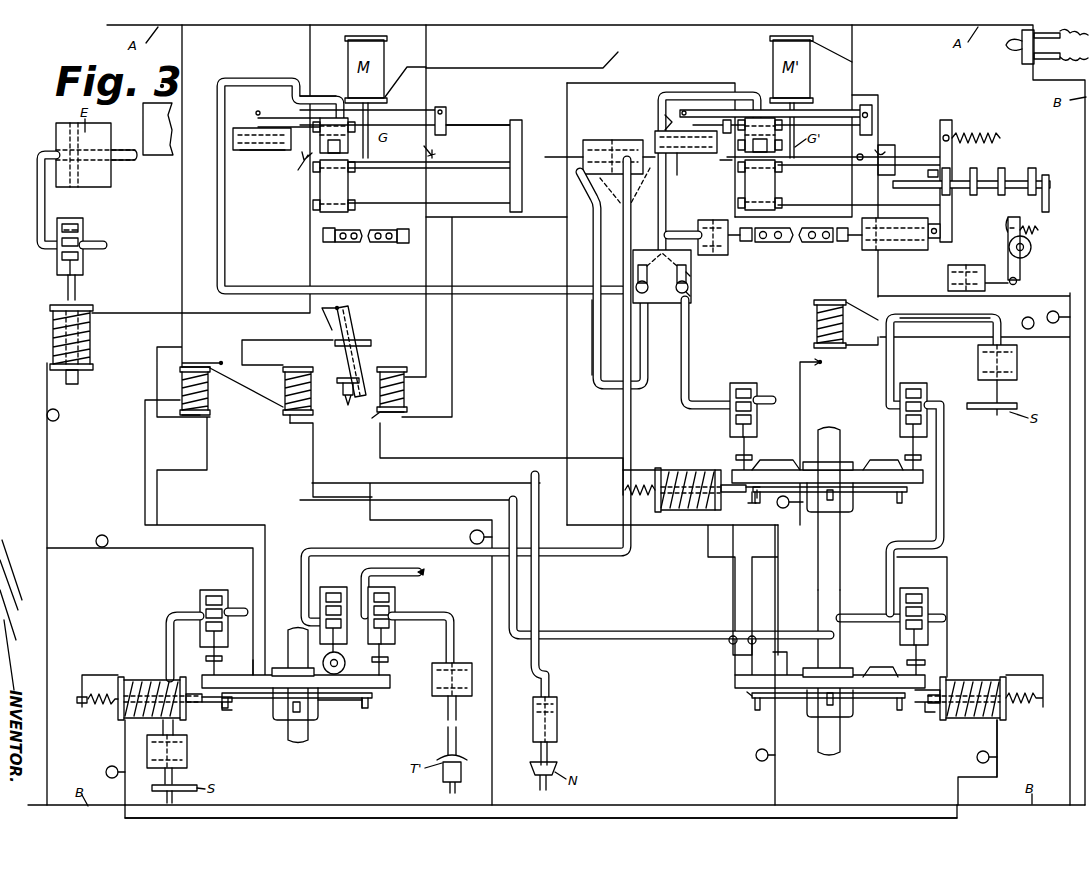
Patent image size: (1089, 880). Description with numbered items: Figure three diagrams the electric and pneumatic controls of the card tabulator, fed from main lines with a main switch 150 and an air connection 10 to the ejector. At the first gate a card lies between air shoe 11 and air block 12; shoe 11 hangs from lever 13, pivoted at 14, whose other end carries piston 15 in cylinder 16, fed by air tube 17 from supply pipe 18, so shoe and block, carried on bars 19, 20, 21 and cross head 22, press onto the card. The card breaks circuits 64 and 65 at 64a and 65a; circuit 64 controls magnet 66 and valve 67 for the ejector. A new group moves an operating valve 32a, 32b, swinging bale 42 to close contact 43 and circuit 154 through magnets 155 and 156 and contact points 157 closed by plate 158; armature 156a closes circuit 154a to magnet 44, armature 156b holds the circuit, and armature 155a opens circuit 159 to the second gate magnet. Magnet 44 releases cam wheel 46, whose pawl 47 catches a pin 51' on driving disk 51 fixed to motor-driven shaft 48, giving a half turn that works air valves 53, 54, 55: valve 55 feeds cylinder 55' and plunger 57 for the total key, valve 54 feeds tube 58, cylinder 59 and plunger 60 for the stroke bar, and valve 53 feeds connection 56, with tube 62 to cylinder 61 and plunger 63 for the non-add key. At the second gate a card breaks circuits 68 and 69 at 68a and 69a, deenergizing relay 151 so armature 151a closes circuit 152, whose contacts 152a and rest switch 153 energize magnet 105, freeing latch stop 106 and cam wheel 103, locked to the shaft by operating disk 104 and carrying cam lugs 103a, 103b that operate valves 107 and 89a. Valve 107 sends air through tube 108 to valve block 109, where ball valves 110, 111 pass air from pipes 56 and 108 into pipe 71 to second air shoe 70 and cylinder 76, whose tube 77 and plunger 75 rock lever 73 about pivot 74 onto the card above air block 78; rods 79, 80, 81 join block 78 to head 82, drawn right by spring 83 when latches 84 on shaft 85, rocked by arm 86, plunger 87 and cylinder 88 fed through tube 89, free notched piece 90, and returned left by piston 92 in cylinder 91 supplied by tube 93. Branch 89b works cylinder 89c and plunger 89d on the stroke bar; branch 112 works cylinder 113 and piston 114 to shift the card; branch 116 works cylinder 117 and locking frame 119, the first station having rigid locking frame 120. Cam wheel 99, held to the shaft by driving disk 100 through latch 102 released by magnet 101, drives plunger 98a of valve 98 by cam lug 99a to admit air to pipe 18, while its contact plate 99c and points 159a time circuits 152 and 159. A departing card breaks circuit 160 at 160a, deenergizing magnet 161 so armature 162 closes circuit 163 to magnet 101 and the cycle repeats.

The pipe from pump E 10 is at (40, 195).
The cylinder 11 is at (348, 135).
The cylinder 12 is at (348, 185).
The shaft 13 is at (396, 110).
The block 14 is at (446, 110).
The control box 15 is at (256, 130).
The box bottom 16 is at (283, 150).
The pipe 17 is at (313, 99).
The pipe 18 is at (218, 116).
The rod 19 is at (486, 126).
The rod 20 is at (486, 168).
The rod 21 is at (478, 205).
The crosshead 22 is at (523, 140).
The contact 32a is at (342, 370).
The contact 32b is at (348, 406).
The lever 42 is at (345, 318).
The pivot bracket 43 is at (335, 316).
The solenoid 44 is at (133, 686).
The carriage 46 is at (382, 688).
The link 47 is at (216, 704).
The shaft 48 is at (830, 434).
The bar 51 is at (340, 711).
The bar end 51' is at (365, 716).
The valve 53 is at (398, 621).
The valve 54 is at (207, 590).
The valve 55 is at (409, 631).
The cylinder 55' is at (457, 668).
The pipe 56 is at (632, 425).
The rod 57 is at (450, 717).
The pipe 58 is at (170, 614).
The cylinder 59 is at (182, 756).
The rod 60 is at (173, 774).
The cylinder 61 is at (557, 718).
The pipe 62 is at (540, 673).
The rod 63 is at (548, 752).
The wire 64 is at (122, 313).
The contact 64a is at (297, 169).
The wire 65 is at (428, 185).
The contact 65a is at (419, 142).
The solenoid 66 is at (52, 322).
The valve 67 is at (83, 233).
The wire 68 is at (733, 198).
The contact 68a is at (726, 160).
The wire 69 is at (527, 217).
The contact 69a is at (859, 162).
The pipe 70 is at (752, 118).
The pipe 71 is at (658, 97).
The bar 73 is at (820, 110).
The block 74 is at (872, 109).
The rod 75 is at (686, 130).
The control box 76 is at (683, 153).
The connection 77 is at (658, 120).
The cylinder 78 is at (767, 183).
The rod 79 is at (912, 148).
The rod 80 is at (897, 167).
The rod 81 is at (810, 204).
The bar 82 is at (952, 128).
The spring 83 is at (1000, 138).
The fingers 84 is at (1030, 195).
The stop 85 is at (1050, 185).
The lever 86 is at (1022, 278).
The pivot 87 is at (1017, 284).
The cylinder 88 is at (965, 265).
The pipe 89 is at (890, 367).
The valve 89a is at (900, 410).
The pipe 89b is at (960, 318).
The cylinder 89c is at (1017, 362).
The rod 89d is at (1000, 390).
The shaft 90 is at (945, 175).
The cylinder 91 is at (861, 245).
The connector 92 is at (950, 228).
The pipe 93 is at (945, 458).
The valve 98 is at (928, 592).
The stem 98a is at (920, 660).
The plate 99 is at (845, 675).
The cam 99a is at (878, 669).
The stop 99c is at (758, 690).
The hub 100 is at (797, 694).
The solenoid 101 is at (968, 684).
The link 102 is at (920, 704).
The plate 103 is at (913, 484).
The cam 103a is at (878, 460).
The cam 103b is at (770, 460).
The hub 104 is at (880, 488).
The solenoid 105 is at (688, 470).
The link 106 is at (752, 503).
The valve 107 is at (749, 383).
The pipe 108 is at (685, 352).
The switch 109 is at (688, 276).
The switch 110 is at (662, 276).
The switch 111 is at (690, 296).
The pipe 112 is at (622, 224).
The cylinder 113 is at (600, 142).
The rod 114 is at (680, 172).
The pipe 116 is at (596, 322).
The cylinder 117 is at (715, 255).
The coupling 119 is at (781, 242).
The coupling 120 is at (355, 245).
The clamp 150 is at (1015, 50).
The solenoid 151 is at (407, 391).
The armature 151a is at (398, 414).
The wire 152 is at (452, 355).
The contact 152a is at (737, 666).
The wire 153 is at (733, 678).
The wire 154 is at (182, 262).
The wire 154a is at (157, 362).
The solenoid 155 is at (284, 385).
The armature 155a is at (294, 416).
The solenoid 156 is at (210, 394).
The armature 156a is at (206, 417).
The lead 156b is at (202, 366).
The roller 157 is at (253, 670).
The plate 158 is at (360, 675).
The wire 159 is at (566, 352).
The contact 159a is at (788, 668).
The wire 160 is at (878, 97).
The contact 160a is at (869, 145).
The solenoid 161 is at (815, 320).
The armature 162 is at (824, 355).
The wire 163 is at (893, 156).